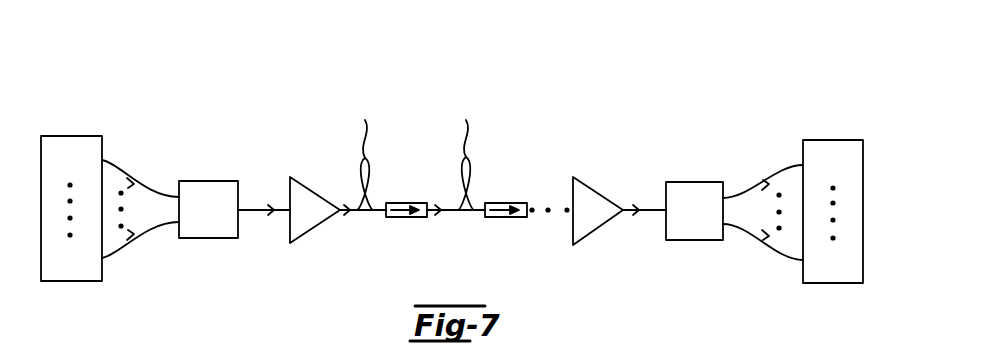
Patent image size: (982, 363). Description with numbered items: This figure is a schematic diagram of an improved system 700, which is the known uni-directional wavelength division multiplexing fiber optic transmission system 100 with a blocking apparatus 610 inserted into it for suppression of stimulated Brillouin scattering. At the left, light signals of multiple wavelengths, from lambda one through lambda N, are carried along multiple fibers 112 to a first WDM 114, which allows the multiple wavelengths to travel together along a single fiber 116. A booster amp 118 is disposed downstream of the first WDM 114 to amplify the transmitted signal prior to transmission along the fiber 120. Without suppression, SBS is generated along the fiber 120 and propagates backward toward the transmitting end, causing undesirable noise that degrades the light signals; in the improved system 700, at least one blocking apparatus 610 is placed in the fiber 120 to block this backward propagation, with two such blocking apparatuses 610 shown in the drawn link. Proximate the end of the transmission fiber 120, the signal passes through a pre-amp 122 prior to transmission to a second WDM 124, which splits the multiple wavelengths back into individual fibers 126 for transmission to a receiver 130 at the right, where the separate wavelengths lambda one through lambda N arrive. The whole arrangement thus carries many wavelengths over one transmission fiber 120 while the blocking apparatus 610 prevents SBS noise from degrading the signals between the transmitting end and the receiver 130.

The improved system 700 is at (384, 74).
The uni-directional WDM fiber optic transmission system 100 is at (75, 136).
The multiple fibers 112 is at (128, 172).
The first WDM 114 is at (205, 238).
The single fiber 116 is at (252, 207).
The booster amp 118 is at (317, 226).
The blocking apparatus 610 is at (405, 218).
The fiber 120 is at (476, 177).
The pre-amp 122 is at (600, 195).
The second WDM 124 is at (700, 182).
The individual fibers 126 is at (778, 172).
The receiver 130 is at (832, 140).